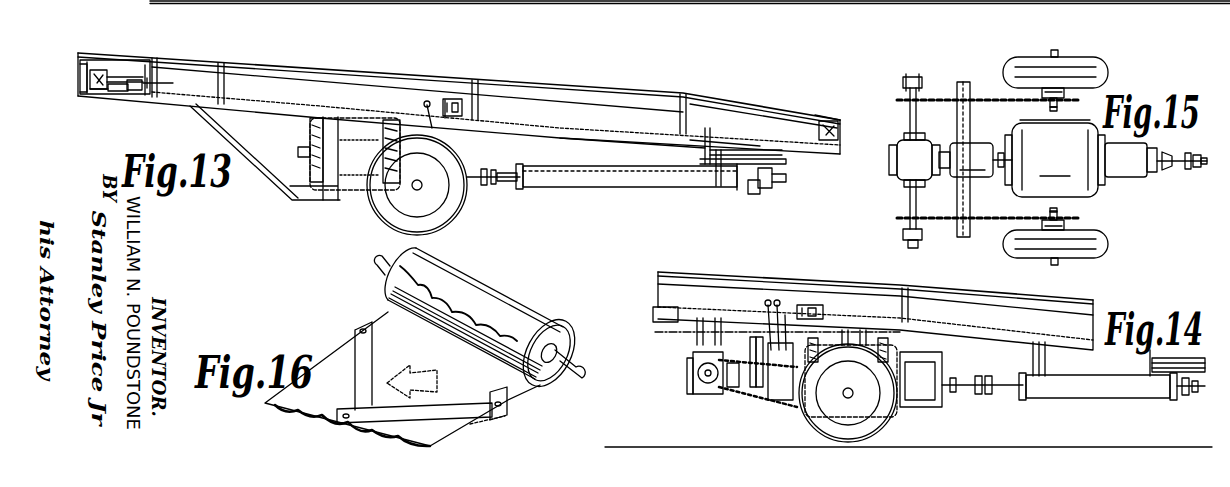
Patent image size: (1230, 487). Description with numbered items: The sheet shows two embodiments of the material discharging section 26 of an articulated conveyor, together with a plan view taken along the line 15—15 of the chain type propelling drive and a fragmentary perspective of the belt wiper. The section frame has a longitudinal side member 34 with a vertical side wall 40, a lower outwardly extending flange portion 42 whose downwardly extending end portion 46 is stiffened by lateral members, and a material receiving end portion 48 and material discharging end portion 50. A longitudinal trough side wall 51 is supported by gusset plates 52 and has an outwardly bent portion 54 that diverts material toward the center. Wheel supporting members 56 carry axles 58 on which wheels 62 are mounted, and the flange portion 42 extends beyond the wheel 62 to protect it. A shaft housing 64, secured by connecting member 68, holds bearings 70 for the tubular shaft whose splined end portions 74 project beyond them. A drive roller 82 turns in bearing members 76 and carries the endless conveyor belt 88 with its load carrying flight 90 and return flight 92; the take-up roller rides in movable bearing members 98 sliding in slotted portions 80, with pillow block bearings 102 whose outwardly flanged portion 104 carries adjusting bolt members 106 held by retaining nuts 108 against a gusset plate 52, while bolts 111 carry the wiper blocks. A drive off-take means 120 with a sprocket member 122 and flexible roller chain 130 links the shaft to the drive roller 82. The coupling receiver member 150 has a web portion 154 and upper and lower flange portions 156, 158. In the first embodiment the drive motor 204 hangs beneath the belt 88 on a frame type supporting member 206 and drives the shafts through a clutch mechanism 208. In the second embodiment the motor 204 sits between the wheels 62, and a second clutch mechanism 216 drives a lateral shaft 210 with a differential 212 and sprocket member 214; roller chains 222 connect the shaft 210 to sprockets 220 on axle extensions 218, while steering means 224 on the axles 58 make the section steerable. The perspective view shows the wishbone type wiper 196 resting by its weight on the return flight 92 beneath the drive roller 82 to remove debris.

In FIG. 13, the material discharging section 26 is at (265, 203).
In FIG. 13, the longitudinal side member 34 is at (612, 88).
In FIG. 14, the longitudinal side member 34 is at (792, 278).
In FIG. 13, the vertical side wall 40 is at (640, 111).
In FIG. 14, the vertical side wall 40 is at (702, 297).
In FIG. 13, the lower outwardly extending flange portion 42 is at (698, 130).
In FIG. 14, the lower outwardly extending flange portion 42 is at (672, 290).
In FIG. 13, the downwardly extending end portion 46 is at (700, 142).
In FIG. 14, the downwardly extending end portion 46 is at (660, 312).
In FIG. 13, the material receiving end portion 48 is at (826, 110).
In FIG. 13, the material discharging end portion 50 is at (75, 60).
In FIG. 13, the longitudinal trough side wall 51 is at (365, 77).
In FIG. 14, the longitudinal trough side wall 51 is at (829, 290).
In FIG. 13, the gusset plate 52 is at (160, 68).
In FIG. 14, the gusset plate 52 is at (907, 302).
In FIG. 13, the outwardly bent portion 54 is at (777, 106).
In FIG. 15, the wheel supporting member 56 is at (1066, 92).
In FIG. 13, the axle 58 is at (422, 187).
In FIG. 15, the axle 58 is at (1056, 52).
In FIG. 14, the axle 58 is at (853, 395).
In FIG. 13, the wheel 62 is at (448, 222).
In FIG. 15, the wheel 62 is at (1108, 72).
In FIG. 14, the wheel 62 is at (805, 428).
In FIG. 13, the shaft housing 64 is at (616, 184).
In FIG. 14, the shaft housing 64 is at (1075, 392).
In FIG. 13, the connecting member 68 is at (702, 153).
In FIG. 14, the connecting member 68 is at (1152, 367).
In FIG. 13, the bearing 70 is at (524, 184).
In FIG. 14, the bearing 70 is at (1022, 392).
In FIG. 13, the splined end portion 74 is at (506, 182).
In FIG. 14, the splined end portion 74 is at (1190, 398).
In FIG. 13, the bearing member 76 is at (838, 128).
In FIG. 13, the slotted portion 80 is at (120, 76).
In FIG. 16, the drive roller 82 is at (553, 335).
In FIG. 16, the endless conveyor belt 88 is at (318, 402).
In FIG. 16, the load carrying flight 90 is at (445, 288).
In FIG. 16, the return flight 92 is at (266, 406).
In FIG. 13, the movable bearing member 98 is at (97, 73).
In FIG. 13, the pillow block bearing 102 is at (96, 97).
In FIG. 13, the outwardly flanged portion 104 is at (112, 94).
In FIG. 13, the adjusting bolt member 106 is at (124, 92).
In FIG. 13, the retaining nut 108 is at (150, 88).
In FIG. 13, the bolt 111 is at (75, 86).
In FIG. 13, the drive off-take means 120 is at (795, 170).
In FIG. 14, the drive off-take means 120 is at (1166, 403).
In FIG. 13, the sprocket member 122 is at (755, 196).
In FIG. 13, the flexible roller chain 130 is at (772, 178).
In FIG. 14, the flexible roller chain 130 is at (1197, 375).
In FIG. 13, the receiver member 150 is at (795, 162).
In FIG. 13, the web portion 154 is at (752, 158).
In FIG. 13, the upper flange portion 156 is at (722, 150).
In FIG. 13, the lower flange portion 158 is at (730, 166).
In FIG. 16, the wishbone type wiper 196 is at (440, 410).
In FIG. 13, the drive motor 204 is at (352, 196).
In FIG. 15, the drive motor 204 is at (1055, 158).
In FIG. 14, the drive motor 204 is at (885, 420).
In FIG. 13, the frame type supporting member 206 is at (292, 212).
In FIG. 13, the clutch mechanism 208 is at (445, 133).
In FIG. 15, the clutch mechanism 208 is at (1132, 180).
In FIG. 14, the clutch mechanism 208 is at (940, 405).
In FIG. 15, the lateral shaft 210 is at (910, 122).
In FIG. 14, the lateral shaft 210 is at (703, 395).
In FIG. 15, the differential 212 is at (905, 174).
In FIG. 14, the differential 212 is at (694, 365).
In FIG. 15, the sprocket member 214 is at (910, 86).
In FIG. 15, the second clutch mechanism 216 is at (975, 160).
In FIG. 14, the second clutch mechanism 216 is at (758, 400).
In FIG. 15, the extension 218 is at (1050, 102).
In FIG. 15, the sprocket 220 is at (1045, 99).
In FIG. 15, the roller chain 222 is at (940, 100).
In FIG. 15, the steering means 224 is at (1046, 92).
In FIG. 14, the section line 15 is at (666, 332).